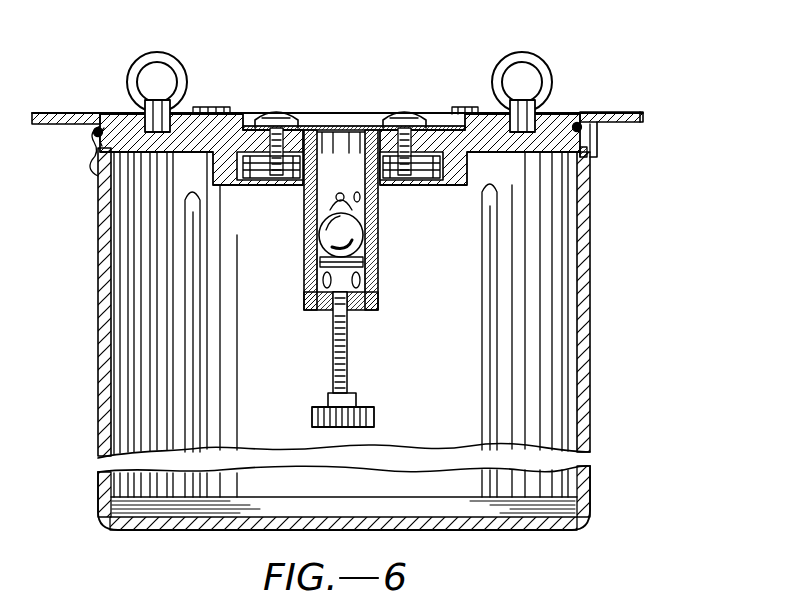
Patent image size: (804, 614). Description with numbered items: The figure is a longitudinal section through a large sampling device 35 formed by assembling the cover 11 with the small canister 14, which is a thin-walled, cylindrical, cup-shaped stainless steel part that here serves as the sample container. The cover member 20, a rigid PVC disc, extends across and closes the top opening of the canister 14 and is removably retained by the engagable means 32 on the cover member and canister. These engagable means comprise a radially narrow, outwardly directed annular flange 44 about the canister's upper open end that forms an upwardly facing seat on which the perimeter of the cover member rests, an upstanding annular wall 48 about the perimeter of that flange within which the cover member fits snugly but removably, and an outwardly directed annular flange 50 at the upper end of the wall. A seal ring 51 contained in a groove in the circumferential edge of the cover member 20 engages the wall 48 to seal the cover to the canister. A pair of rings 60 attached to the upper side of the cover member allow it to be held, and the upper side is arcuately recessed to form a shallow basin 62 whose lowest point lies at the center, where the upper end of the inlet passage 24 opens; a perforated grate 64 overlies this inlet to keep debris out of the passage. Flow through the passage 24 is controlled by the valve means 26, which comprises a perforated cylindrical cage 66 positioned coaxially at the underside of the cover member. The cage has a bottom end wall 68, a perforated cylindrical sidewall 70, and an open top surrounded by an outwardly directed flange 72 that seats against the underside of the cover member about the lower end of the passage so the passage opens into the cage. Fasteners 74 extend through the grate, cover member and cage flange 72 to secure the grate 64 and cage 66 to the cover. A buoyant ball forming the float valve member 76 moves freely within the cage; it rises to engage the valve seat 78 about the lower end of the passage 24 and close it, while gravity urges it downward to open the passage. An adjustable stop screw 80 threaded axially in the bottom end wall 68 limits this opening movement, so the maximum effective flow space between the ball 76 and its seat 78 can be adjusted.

The cover 11 is at (116, 113).
The small canister 14 is at (98, 312).
The cover member 20 is at (200, 133).
The inlet passage 24 is at (340, 140).
The valve means 26 is at (307, 259).
The engagable means 32 is at (572, 110).
The large sampling device 35 is at (590, 262).
The annular flange 44 is at (103, 167).
The annular wall 48 is at (598, 133).
The outwardly directed annular flange 50 is at (643, 114).
The seal ring 51 is at (94, 135).
The rings 60 is at (153, 50).
The basin 62 is at (470, 110).
The perforated grate 64 is at (303, 124).
The perforated cylindrical cage 66 is at (379, 224).
The bottom end wall 68 is at (358, 312).
The perforated cylindrical sidewall 70 is at (373, 258).
The flange 72 is at (417, 129).
The fasteners 74 is at (290, 118).
The float valve member 76 is at (330, 234).
The valve seat 78 is at (316, 196).
The adjustable stop screw 80 is at (350, 358).